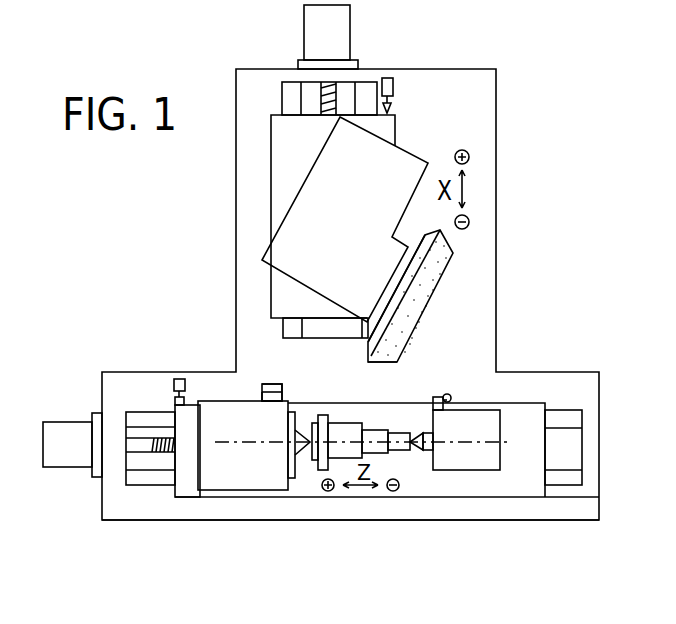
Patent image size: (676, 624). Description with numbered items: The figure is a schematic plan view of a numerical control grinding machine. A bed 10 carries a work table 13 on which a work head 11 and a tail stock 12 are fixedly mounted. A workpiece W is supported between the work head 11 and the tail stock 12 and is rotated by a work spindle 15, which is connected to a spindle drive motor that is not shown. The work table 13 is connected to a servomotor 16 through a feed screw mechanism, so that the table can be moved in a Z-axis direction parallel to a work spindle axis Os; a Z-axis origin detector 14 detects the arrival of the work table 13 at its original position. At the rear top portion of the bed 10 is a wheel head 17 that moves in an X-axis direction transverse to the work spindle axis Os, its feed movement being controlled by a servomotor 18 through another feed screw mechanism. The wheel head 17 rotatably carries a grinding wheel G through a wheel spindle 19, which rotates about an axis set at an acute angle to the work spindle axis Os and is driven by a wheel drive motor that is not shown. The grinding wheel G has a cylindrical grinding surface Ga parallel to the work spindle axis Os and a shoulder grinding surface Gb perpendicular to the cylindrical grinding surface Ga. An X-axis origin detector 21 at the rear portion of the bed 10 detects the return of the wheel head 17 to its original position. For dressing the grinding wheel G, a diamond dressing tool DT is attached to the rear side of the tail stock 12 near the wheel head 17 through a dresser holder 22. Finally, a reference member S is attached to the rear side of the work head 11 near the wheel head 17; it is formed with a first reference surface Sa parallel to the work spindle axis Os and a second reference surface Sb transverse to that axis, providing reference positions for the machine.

The bed 10 is at (485, 165).
The work head 11 is at (254, 485).
The tail stock 12 is at (470, 467).
The work table 13 is at (410, 497).
The Z-axis origin detector 14 is at (173, 382).
The work spindle 15 is at (293, 465).
The servomotor 16 is at (63, 467).
The wheel head 17 is at (392, 160).
The servomotor 18 is at (345, 23).
The wheel spindle 19 is at (386, 288).
The X-axis origin detector 21 is at (394, 88).
The dresser holder 22 is at (433, 407).
The grinding wheel G is at (432, 275).
The cylindrical grinding surface Ga is at (395, 367).
The shoulder grinding surface Gb is at (368, 348).
The reference member S is at (262, 390).
The first reference surface Sa is at (266, 385).
The second reference surface Sb is at (282, 388).
The workpiece W is at (380, 425).
The diamond dressing tool DT is at (450, 396).
The work spindle axis Os is at (474, 442).